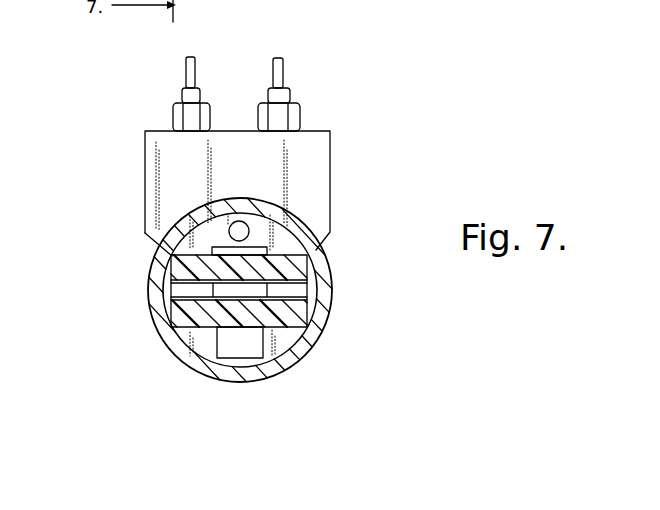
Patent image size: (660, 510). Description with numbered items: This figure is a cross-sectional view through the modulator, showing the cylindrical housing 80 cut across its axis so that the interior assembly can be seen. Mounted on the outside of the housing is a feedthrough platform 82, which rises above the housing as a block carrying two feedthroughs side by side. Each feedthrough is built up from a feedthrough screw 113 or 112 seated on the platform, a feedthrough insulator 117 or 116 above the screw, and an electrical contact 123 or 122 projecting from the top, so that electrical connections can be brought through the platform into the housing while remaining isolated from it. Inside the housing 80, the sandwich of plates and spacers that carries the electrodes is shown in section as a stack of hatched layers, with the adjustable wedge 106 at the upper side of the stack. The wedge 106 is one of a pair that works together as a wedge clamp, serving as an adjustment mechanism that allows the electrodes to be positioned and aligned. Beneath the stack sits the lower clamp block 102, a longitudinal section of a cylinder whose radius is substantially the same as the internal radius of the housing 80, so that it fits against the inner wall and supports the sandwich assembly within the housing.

The housing 80 is at (331, 287).
The feedthrough platform 82 is at (313, 187).
The lower clamp block 102 is at (283, 345).
The wedge 106 is at (287, 243).
The feedthrough screw 112 is at (296, 114).
The feedthrough screw 113 is at (174, 118).
The feedthrough insulator 116 is at (284, 97).
The feedthrough insulator 117 is at (187, 97).
The electrical contact 122 is at (283, 63).
The electrical contact 123 is at (187, 70).